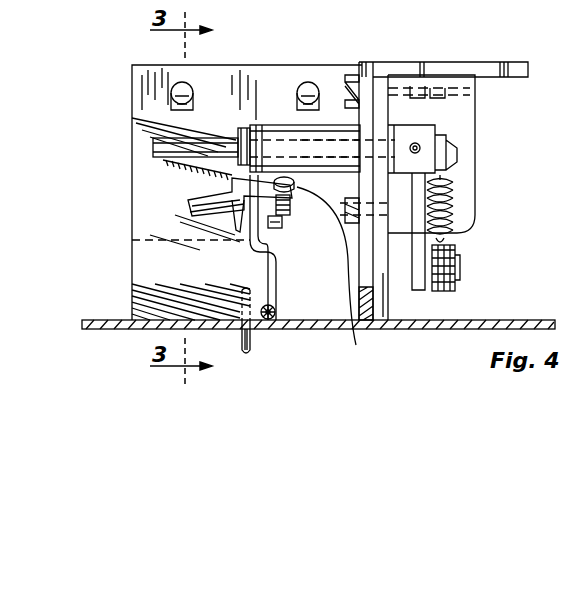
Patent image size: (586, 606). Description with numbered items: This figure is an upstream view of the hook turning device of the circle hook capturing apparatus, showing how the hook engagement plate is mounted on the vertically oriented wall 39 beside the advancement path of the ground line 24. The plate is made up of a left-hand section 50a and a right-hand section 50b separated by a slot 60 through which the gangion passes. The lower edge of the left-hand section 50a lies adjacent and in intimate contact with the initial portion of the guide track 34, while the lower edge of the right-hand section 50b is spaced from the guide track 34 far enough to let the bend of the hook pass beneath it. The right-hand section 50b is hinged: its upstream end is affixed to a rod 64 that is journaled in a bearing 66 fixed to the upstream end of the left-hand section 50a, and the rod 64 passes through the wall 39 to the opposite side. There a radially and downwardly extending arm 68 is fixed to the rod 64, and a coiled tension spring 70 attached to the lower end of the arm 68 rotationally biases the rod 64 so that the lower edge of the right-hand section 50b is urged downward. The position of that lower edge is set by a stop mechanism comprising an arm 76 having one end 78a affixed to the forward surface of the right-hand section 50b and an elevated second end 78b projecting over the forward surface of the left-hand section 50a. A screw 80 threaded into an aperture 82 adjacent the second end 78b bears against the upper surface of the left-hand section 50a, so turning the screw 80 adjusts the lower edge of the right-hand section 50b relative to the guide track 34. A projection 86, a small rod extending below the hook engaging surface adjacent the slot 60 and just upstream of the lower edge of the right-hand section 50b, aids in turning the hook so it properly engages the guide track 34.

The ground line 24 is at (275, 315).
The guide track 34 is at (100, 320).
The wall 39 is at (342, 118).
The left-hand section 50a is at (152, 275).
The right-hand section 50b is at (132, 190).
The slot 60 is at (268, 278).
The rod 64 is at (238, 145).
The bearing 66 is at (270, 128).
The arm 68 is at (452, 246).
The coiled tension spring 70 is at (455, 195).
The arm 76 is at (228, 238).
The one end 78a is at (190, 200).
The second end 78b is at (358, 350).
The screw 80 is at (294, 198).
The aperture 82 is at (290, 215).
The projection 86 is at (252, 355).